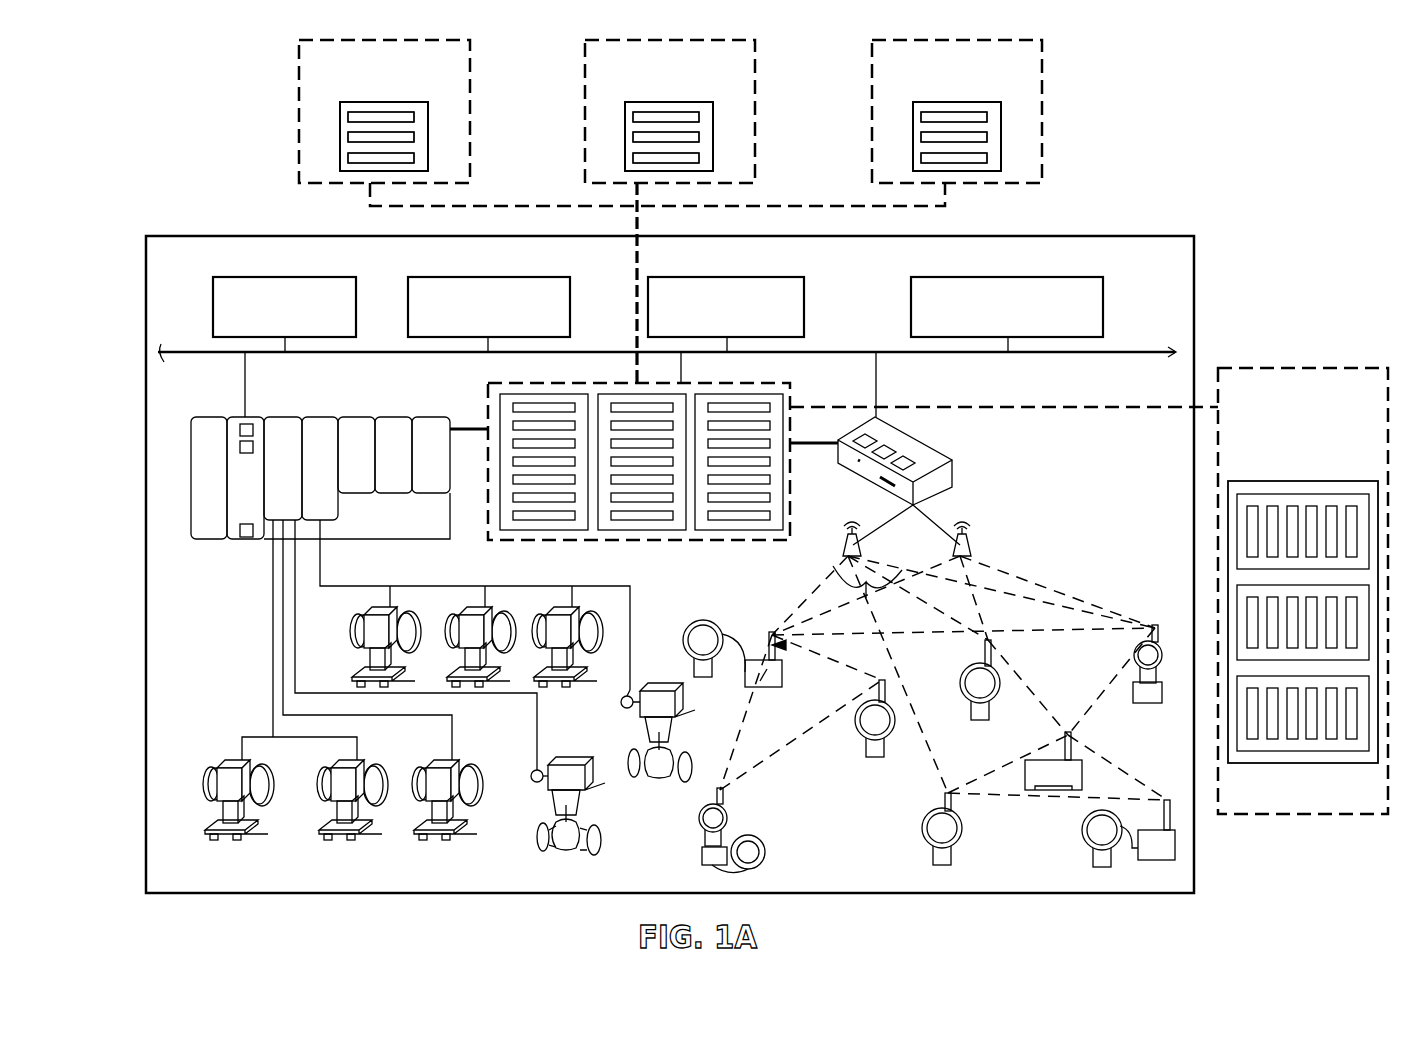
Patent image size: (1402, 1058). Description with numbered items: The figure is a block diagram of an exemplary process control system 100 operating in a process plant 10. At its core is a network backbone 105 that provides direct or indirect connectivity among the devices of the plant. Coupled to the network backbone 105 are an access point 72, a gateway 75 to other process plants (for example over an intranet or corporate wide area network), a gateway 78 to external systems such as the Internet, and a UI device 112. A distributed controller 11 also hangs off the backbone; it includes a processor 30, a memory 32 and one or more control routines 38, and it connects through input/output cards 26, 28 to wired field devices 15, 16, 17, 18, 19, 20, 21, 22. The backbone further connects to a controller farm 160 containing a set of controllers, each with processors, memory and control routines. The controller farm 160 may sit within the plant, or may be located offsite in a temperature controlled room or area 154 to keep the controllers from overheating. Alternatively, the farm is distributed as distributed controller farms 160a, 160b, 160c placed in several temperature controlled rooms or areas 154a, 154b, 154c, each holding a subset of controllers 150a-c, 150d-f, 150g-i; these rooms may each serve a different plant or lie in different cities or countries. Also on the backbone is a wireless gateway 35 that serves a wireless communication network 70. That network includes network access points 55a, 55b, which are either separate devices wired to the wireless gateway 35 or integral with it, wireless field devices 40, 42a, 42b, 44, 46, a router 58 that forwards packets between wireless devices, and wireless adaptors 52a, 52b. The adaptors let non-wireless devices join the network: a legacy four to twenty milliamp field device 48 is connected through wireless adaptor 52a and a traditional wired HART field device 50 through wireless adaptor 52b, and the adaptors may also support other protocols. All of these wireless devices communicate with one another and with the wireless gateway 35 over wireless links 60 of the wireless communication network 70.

The process plant 10 is at (1146, 236).
The process control system 100 is at (228, 272).
The temperature controlled room or area 154a is at (470, 52).
The temperature controlled room or area 154b is at (755, 52).
The temperature controlled room or area 154c is at (1042, 52).
The temperature controlled room or area 154 is at (1322, 368).
The distributed controller farm 160a is at (340, 120).
The distributed controller farm 160b is at (625, 120).
The distributed controller farm 160c is at (913, 120).
The controller farm 160 is at (1330, 481).
The controllers 150a-c is at (355, 158).
The controllers 150d-f is at (640, 158).
The controllers 150g-i is at (927, 158).
The gateway to other process plants 75 is at (356, 304).
The UI device 112 is at (570, 304).
The access point 72 is at (804, 304).
The gateway to external systems 78 is at (1103, 304).
The network backbone 105 is at (864, 352).
The distributed controller 11 is at (237, 418).
The input/output card 26 is at (281, 433).
The input/output card 28 is at (318, 433).
The processor 30 is at (240, 430).
The memory 32 is at (240, 447).
The control routine 38 is at (246, 538).
The wired field device 15 is at (222, 797).
The wired field device 16 is at (338, 797).
The wired field device 17 is at (432, 797).
The wired field device 18 is at (548, 800).
The wired field device 19 is at (392, 594).
The wired field device 20 is at (487, 594).
The wired field device 21 is at (573, 594).
The wired field device 22 is at (657, 683).
The wireless gateway 35 is at (952, 474).
The network access point 55a is at (862, 547).
The network access point 55b is at (972, 545).
The wireless links 60 is at (1106, 762).
The wireless communication network 70 is at (1087, 602).
The field device 48 is at (716, 620).
The wireless adaptor 52a is at (782, 676).
The wireless adaptor 52b is at (1172, 830).
The wireless field device 42a is at (860, 738).
The wireless field device 42b is at (965, 700).
The wireless field device 44 is at (921, 834).
The wireless field device 46 is at (1150, 704).
The wireless field device 40 is at (766, 850).
The field device 50 is at (1083, 840).
The router 58 is at (1060, 768).